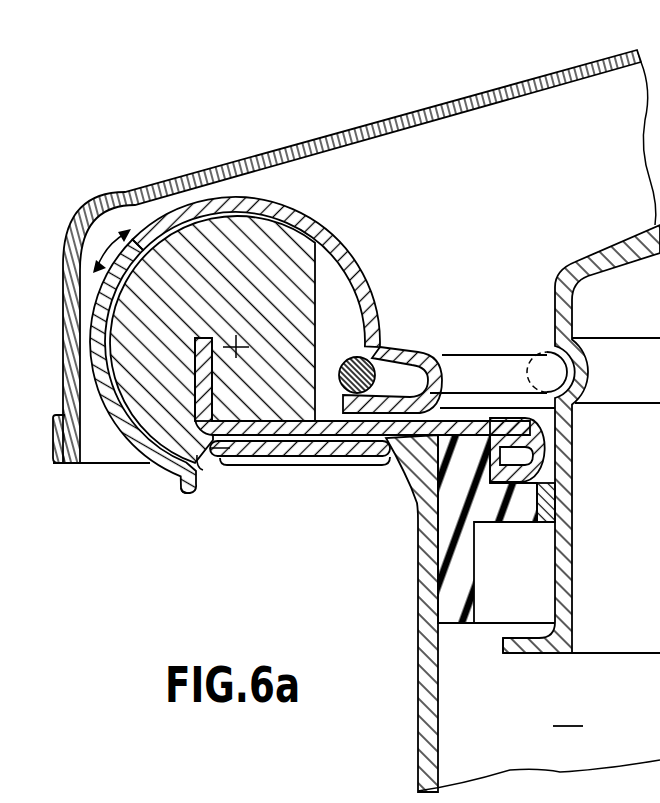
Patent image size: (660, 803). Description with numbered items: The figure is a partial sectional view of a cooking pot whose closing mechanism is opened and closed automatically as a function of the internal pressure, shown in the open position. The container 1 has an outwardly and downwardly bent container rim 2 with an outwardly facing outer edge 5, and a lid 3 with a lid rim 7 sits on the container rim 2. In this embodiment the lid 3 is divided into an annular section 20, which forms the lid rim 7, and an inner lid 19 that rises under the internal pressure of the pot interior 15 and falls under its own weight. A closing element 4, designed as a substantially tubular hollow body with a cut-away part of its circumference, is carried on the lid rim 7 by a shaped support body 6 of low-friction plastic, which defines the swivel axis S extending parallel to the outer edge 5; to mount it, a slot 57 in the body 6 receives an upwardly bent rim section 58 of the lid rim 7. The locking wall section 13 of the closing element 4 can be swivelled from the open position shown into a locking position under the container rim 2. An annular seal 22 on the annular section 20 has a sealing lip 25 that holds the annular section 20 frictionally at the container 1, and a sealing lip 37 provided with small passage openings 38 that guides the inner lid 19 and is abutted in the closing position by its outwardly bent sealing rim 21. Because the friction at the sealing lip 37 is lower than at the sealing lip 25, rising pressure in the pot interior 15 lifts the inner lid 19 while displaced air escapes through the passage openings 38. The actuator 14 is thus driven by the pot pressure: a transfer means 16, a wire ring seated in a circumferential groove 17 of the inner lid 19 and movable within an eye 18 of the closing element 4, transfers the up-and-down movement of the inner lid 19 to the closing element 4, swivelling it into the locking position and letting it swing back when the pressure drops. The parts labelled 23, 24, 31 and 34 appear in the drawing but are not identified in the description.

The container 1 is at (404, 564).
The container rim 2 is at (317, 462).
The lid 3 is at (606, 168).
The closing element 4 is at (325, 232).
The outer edge 5 is at (212, 462).
The shaped support body 6 is at (272, 232).
The lid rim 7 is at (277, 448).
The locking wall section 13 is at (189, 491).
The actuator 14 is at (497, 326).
The pot interior 15 is at (568, 709).
The transfer means 16 is at (517, 357).
The circumferential groove 17 is at (566, 370).
The eye 18 is at (400, 357).
The inner lid 19 is at (558, 521).
The annular section 20 is at (450, 426).
The sealing rim 21 is at (517, 654).
The annular seal 22 is at (480, 524).
The edge 23 is at (200, 472).
The leg 24 is at (432, 708).
The sealing lip 25 is at (455, 615).
The lip 31 is at (150, 458).
The cover panel 34 is at (522, 82).
The sealing lip 37 is at (533, 508).
The passage openings 38 is at (548, 490).
The slot 57 is at (203, 334).
The rim section 58 is at (197, 388).
The swivel axis S is at (240, 346).